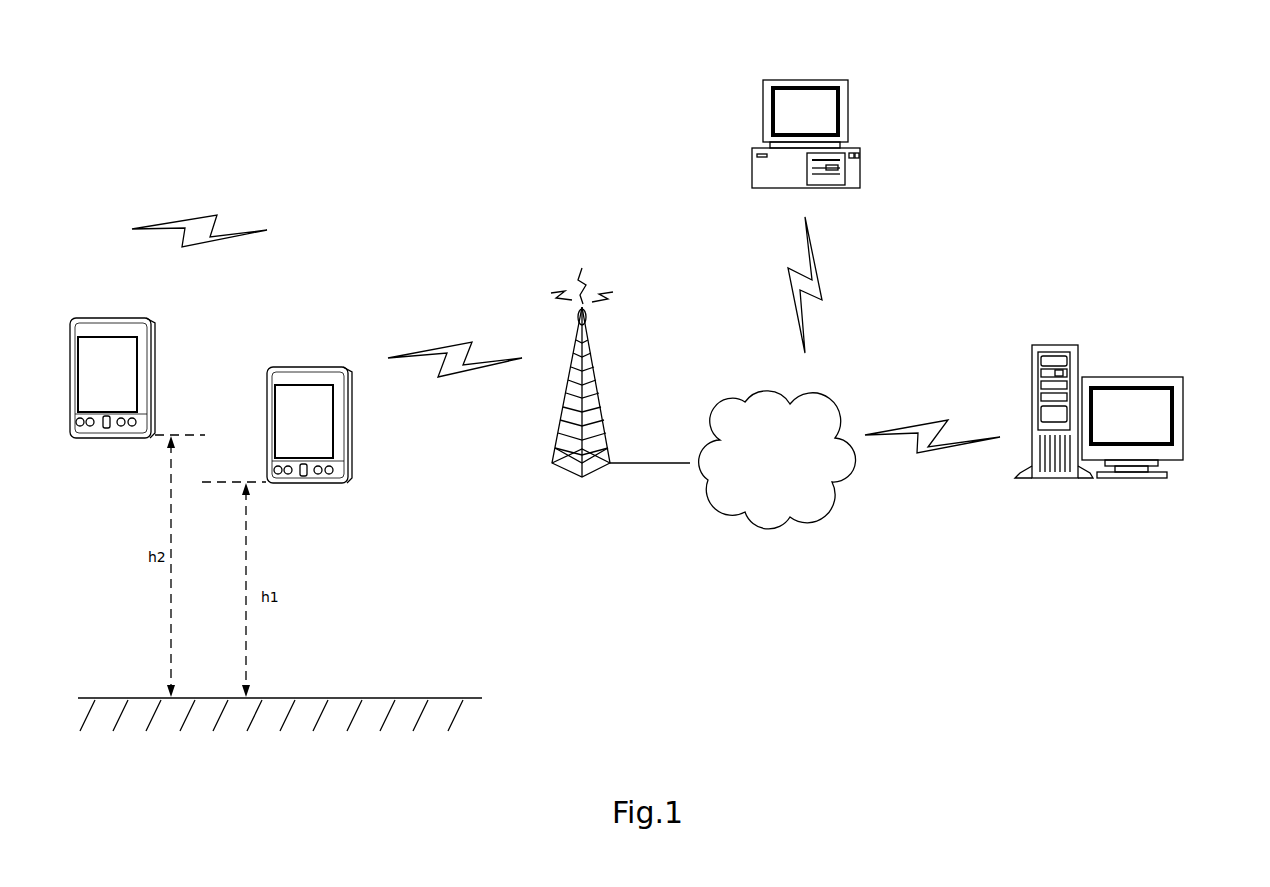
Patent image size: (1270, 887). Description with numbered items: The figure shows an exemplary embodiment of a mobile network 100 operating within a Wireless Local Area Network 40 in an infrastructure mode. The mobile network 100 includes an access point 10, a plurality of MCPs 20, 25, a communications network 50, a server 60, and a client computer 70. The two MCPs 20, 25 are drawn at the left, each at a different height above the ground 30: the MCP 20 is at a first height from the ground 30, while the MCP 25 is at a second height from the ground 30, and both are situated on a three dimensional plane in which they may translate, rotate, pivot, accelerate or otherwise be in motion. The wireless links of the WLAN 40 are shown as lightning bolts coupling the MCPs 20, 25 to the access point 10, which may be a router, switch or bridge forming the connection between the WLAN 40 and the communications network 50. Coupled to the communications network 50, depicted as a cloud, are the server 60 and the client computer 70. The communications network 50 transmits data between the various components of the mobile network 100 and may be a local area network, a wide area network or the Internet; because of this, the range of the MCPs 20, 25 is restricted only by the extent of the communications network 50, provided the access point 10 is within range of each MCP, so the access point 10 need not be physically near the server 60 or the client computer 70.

The access point 10 is at (588, 343).
The MCP 20 is at (313, 372).
The MCP 25 is at (87, 320).
The ground 30 is at (247, 730).
The Wireless Local Area Network 40 is at (203, 213).
The communications network 50 is at (790, 400).
The server 60 is at (1185, 403).
The client computer 70 is at (803, 78).
The mobile network 100 is at (1052, 163).